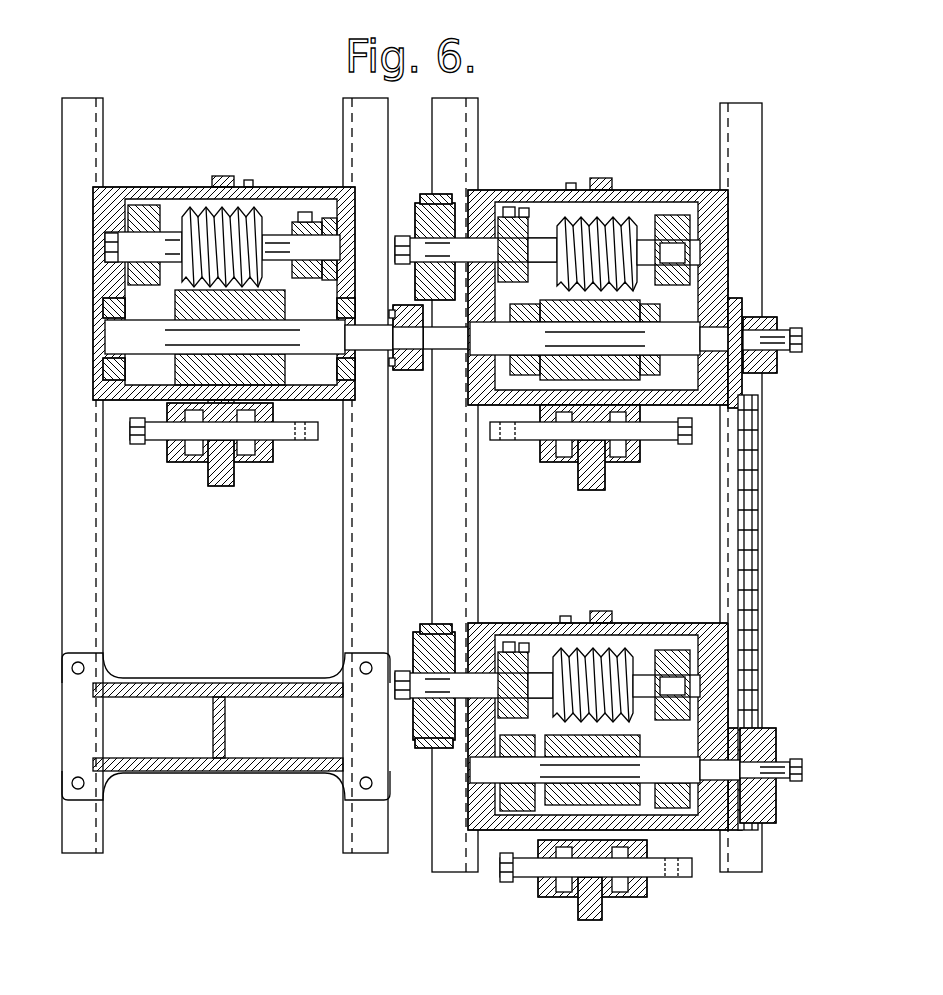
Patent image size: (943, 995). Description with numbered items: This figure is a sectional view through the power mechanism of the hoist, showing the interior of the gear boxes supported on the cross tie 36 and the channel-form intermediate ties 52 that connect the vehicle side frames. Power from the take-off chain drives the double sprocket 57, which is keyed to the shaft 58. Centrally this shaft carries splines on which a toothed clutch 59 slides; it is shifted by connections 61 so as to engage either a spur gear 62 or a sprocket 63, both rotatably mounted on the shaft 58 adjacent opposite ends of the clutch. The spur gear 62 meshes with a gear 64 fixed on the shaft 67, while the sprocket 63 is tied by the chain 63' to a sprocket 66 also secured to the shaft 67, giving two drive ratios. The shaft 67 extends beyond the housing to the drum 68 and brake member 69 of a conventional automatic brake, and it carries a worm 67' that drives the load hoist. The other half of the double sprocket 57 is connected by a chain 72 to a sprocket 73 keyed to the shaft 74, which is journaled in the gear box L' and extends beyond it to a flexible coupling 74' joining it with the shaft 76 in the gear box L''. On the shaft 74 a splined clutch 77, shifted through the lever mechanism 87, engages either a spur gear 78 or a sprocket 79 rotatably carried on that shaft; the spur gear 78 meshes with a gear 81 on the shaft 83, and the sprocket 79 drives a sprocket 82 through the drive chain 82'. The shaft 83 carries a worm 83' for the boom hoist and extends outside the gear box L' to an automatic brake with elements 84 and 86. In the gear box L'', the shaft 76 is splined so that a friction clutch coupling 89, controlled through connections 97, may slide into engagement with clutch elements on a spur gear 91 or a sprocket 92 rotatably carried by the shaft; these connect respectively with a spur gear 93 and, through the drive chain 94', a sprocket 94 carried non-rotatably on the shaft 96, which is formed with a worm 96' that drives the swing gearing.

The cross tie 36 is at (88, 838).
The intermediate ties 52 is at (433, 853).
The sprocket 57 is at (778, 737).
The shaft 58 is at (607, 770).
The toothed clutch 59 is at (610, 748).
The connections 61 is at (655, 877).
The spur gear 62 is at (672, 822).
The sprocket 63 is at (497, 826).
The chain 63' is at (552, 611).
The gear 64 is at (672, 648).
The sprocket 66 is at (510, 641).
The shaft 67 is at (526, 685).
The worm 67' is at (602, 652).
The drum 68 is at (420, 733).
The brake member 69 is at (425, 748).
The chain 72 is at (752, 522).
The sprocket 73 is at (772, 326).
The shaft 74 is at (607, 338).
The flexible coupling 74' is at (407, 357).
The shaft 76 is at (287, 337).
The clutch 77 is at (575, 322).
The spur gear 78 is at (646, 322).
The sprocket 79 is at (530, 320).
The gear 81 is at (675, 214).
The sprocket 82 is at (519, 190).
The drive chain 82' is at (556, 177).
The shaft 83 is at (528, 249).
The worm 83' is at (610, 217).
The automatic brake element 84 is at (418, 213).
The automatic brake element 86 is at (426, 195).
The lever mechanism 87 is at (535, 440).
The friction clutch coupling 89 is at (262, 393).
The spur gear 91 is at (150, 398).
The sprocket 92 is at (314, 398).
The spur gear 93 is at (147, 204).
The sprocket 94 is at (314, 221).
The drive chain 94' is at (290, 184).
The shaft 96 is at (233, 247).
The worm 96' is at (222, 194).
The connections 97 is at (284, 440).
The gear box L' is at (598, 271).
The gear box L'' is at (224, 269).